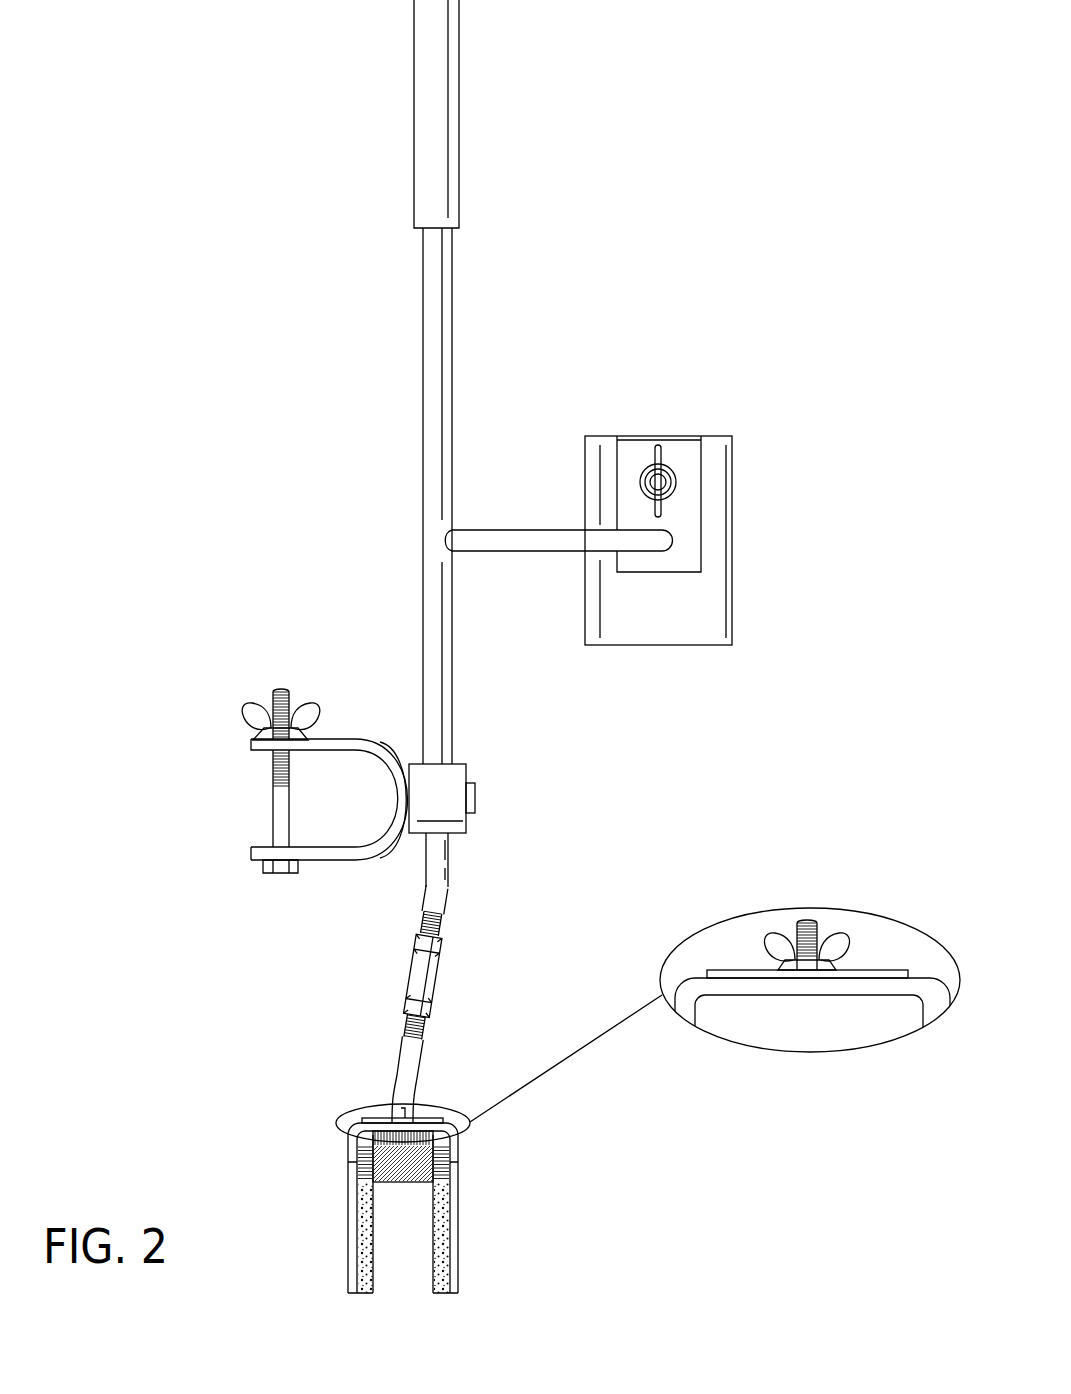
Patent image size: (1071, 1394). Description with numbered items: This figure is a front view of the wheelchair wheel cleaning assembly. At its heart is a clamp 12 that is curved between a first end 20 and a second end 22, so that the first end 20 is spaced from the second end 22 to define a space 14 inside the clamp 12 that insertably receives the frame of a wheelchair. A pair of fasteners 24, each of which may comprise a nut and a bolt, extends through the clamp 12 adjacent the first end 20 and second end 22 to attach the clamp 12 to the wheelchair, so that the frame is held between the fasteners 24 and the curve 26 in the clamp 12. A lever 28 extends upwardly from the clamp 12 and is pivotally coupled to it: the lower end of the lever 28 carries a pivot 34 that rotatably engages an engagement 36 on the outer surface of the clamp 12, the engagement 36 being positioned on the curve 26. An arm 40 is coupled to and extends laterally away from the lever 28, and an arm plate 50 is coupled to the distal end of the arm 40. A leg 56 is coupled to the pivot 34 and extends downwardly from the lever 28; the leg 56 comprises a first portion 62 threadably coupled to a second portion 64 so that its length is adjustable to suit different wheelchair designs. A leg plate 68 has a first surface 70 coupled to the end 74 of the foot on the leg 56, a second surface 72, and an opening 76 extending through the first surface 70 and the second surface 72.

The clamp 12 is at (358, 740).
The space 14 is at (337, 802).
The first end 20 is at (250, 740).
The second end 22 is at (250, 852).
The fasteners 24 is at (280, 688).
The curve 26 is at (392, 748).
The lever 28 is at (425, 465).
The pivot 34 is at (443, 820).
The engagement 36 is at (475, 798).
The arm 40 is at (478, 531).
The arm plate 50 is at (682, 502).
The leg 56 is at (448, 890).
The first portion 62 is at (420, 885).
The second portion 64 is at (395, 1040).
The leg plate 68 is at (908, 970).
The first surface 70 is at (860, 972).
The second surface 72 is at (877, 975).
The end 74 is at (420, 1140).
The opening 76 is at (797, 975).